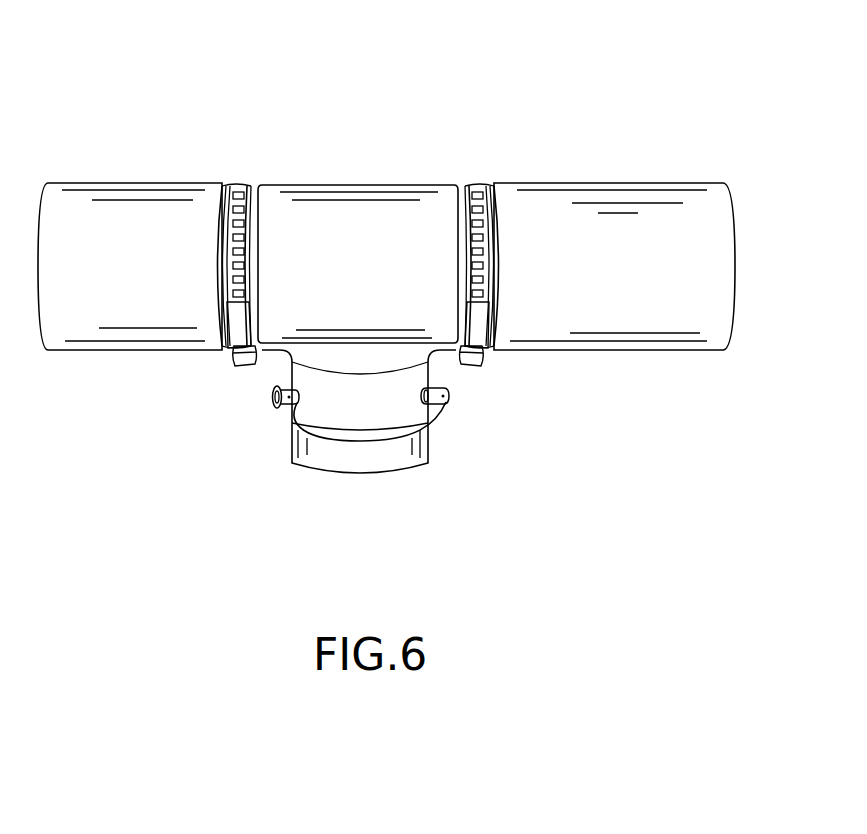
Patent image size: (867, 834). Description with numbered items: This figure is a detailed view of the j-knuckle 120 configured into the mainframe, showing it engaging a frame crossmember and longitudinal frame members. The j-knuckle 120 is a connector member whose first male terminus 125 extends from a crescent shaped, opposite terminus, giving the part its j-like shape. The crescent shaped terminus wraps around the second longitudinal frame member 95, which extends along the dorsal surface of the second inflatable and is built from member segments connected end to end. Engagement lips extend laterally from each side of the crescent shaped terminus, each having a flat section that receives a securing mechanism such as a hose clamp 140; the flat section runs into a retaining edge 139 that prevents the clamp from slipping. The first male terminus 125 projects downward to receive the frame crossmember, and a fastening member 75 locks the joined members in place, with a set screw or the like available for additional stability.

The j-knuckle 120 is at (333, 94).
The second longitudinal frame member 95 is at (620, 197).
The retaining edge 139 is at (224, 190).
The hose clamp 140 is at (250, 187).
The first male terminus 125 is at (343, 465).
The fastening member 75 is at (272, 397).